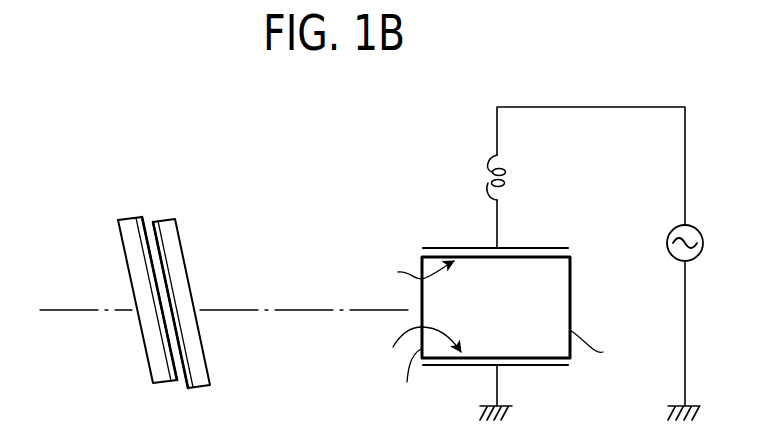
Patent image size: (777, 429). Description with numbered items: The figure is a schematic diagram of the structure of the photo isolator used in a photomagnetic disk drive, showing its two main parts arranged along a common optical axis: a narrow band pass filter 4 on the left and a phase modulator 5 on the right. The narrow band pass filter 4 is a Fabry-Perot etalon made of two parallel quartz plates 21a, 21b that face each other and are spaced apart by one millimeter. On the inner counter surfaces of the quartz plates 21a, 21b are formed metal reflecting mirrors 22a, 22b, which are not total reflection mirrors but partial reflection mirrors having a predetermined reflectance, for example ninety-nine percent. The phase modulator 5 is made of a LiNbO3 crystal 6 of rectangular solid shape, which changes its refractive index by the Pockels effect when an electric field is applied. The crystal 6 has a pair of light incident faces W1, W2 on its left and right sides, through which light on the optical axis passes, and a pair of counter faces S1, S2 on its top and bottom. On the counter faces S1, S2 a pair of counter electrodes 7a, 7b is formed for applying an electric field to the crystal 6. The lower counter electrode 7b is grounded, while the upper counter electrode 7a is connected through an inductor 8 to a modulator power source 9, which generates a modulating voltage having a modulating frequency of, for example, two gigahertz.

The narrow band pass filter 4 is at (160, 278).
The parallel quartz plate 21a is at (102, 300).
The parallel quartz plate 21b is at (222, 303).
The metal reflecting mirror 22a is at (143, 237).
The metal reflecting mirror 22b is at (167, 268).
The phase modulator 5 is at (505, 299).
The LiNbO3 crystal 6 is at (563, 272).
The counter electrode 7a is at (437, 247).
The counter electrode 7b is at (548, 367).
The inductor 8 is at (505, 183).
The modulator power source 9 is at (692, 258).
The counter face S1 is at (405, 265).
The counter face S2 is at (404, 347).
The light incident face W1 is at (400, 383).
The light incident face W2 is at (616, 348).